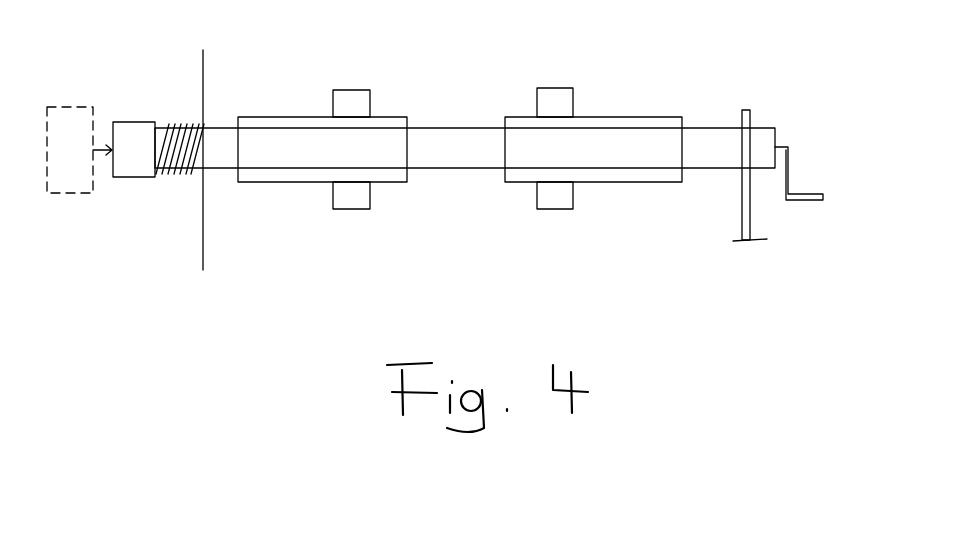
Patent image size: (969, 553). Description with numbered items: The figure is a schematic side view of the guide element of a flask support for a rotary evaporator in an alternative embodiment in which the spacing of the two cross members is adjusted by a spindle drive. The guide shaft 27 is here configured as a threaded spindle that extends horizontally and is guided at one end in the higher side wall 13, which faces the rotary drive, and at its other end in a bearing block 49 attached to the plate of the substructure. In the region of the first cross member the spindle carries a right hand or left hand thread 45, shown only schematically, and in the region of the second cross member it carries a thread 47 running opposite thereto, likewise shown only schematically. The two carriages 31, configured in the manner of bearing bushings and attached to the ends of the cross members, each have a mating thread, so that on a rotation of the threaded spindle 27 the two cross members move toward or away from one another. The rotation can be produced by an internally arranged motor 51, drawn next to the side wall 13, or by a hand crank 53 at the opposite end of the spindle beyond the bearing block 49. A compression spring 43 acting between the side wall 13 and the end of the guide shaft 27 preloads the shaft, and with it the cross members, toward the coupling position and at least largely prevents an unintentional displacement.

The side wall 13 is at (203, 68).
The guide shaft 27 is at (458, 138).
The carriages 31 is at (347, 100).
The compression spring 43 is at (175, 197).
The thread 45 is at (287, 120).
The thread 47 is at (643, 122).
The bearing block 49 is at (740, 217).
The motor 51 is at (69, 107).
The hand crank 53 is at (792, 170).